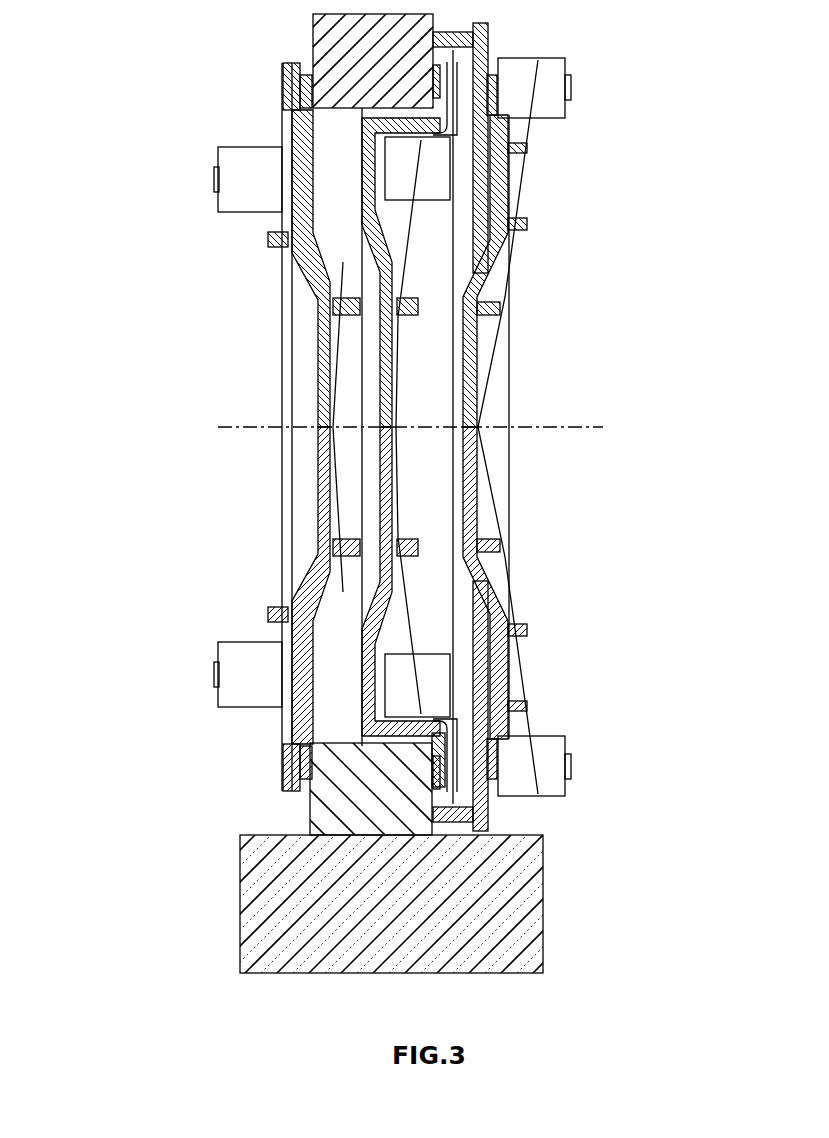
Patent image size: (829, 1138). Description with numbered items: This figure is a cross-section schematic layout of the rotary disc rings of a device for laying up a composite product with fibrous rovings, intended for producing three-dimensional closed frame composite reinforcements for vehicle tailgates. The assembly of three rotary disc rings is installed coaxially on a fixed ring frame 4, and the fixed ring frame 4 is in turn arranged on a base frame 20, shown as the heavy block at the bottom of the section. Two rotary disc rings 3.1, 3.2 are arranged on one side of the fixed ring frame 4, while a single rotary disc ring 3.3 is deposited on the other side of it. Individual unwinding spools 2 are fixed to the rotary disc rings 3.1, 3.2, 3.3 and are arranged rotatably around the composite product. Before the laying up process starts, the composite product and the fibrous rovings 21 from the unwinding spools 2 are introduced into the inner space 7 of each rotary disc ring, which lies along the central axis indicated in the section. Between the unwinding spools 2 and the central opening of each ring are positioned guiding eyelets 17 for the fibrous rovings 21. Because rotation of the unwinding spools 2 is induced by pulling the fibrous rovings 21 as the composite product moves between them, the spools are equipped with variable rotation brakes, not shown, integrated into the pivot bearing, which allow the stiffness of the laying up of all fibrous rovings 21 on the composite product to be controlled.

The unwinding spool 2 is at (252, 180).
The rotary disc ring 3.1 is at (498, 173).
The rotary disc ring 3.2 is at (392, 255).
The rotary disc ring 3.3 is at (313, 263).
The fixed ring frame 4 is at (383, 797).
The inner space 7 is at (417, 437).
The guiding eyelet 17 is at (480, 547).
The base frame 20 is at (465, 918).
The fibrous roving 21 is at (520, 663).